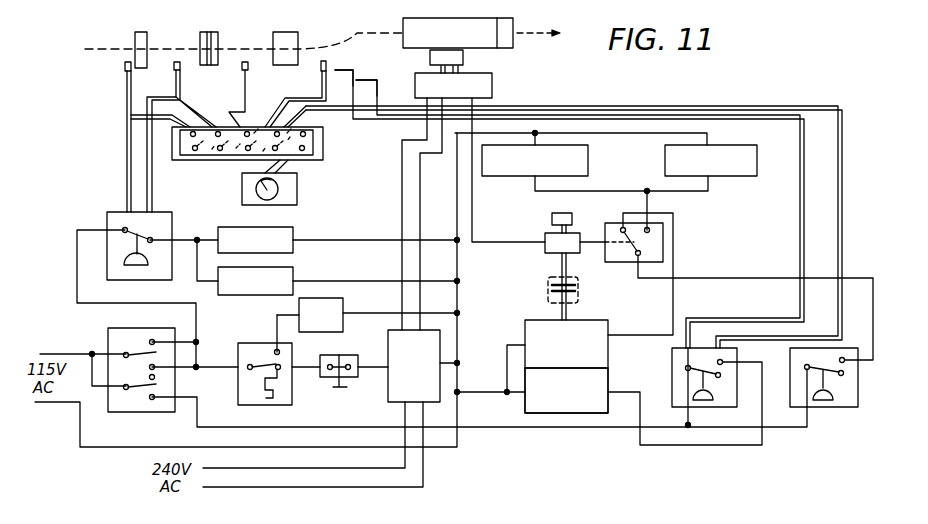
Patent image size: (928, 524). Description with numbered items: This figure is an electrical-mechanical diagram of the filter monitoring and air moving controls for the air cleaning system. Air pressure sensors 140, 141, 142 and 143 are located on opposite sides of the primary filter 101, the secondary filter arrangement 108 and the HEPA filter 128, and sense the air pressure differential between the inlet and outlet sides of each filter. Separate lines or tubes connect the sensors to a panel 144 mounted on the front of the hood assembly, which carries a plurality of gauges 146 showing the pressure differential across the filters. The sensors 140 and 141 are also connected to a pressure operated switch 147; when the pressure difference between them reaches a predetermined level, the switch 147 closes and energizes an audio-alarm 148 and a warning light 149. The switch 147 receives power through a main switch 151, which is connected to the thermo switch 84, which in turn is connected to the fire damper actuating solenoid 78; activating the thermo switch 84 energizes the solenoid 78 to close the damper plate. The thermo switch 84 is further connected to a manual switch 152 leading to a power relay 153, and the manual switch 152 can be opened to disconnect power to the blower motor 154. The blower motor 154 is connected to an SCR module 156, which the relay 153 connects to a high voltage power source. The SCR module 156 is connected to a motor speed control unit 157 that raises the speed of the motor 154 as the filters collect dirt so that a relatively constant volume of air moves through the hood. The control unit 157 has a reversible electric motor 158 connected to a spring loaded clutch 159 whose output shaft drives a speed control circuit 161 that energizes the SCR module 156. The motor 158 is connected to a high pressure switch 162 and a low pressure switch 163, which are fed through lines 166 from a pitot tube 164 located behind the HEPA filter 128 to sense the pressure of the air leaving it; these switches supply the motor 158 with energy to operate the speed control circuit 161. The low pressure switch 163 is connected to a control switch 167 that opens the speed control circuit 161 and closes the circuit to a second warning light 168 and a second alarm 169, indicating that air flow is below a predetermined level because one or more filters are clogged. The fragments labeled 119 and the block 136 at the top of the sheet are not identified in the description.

The reference marker 119 is at (304, 3).
The primary filter 101 is at (142, 32).
The secondary filter arrangement 108 is at (209, 32).
The HEPA filter 128 is at (288, 32).
The discharge unit 136 is at (470, 43).
The air pressure sensor 140 is at (125, 65).
The air pressure sensor 141 is at (180, 70).
The air pressure sensor 142 is at (248, 70).
The air pressure sensor 143 is at (326, 65).
The pitot tube 164 is at (355, 73).
The blower motor 154 is at (463, 58).
The SCR module 156 is at (436, 96).
The panel 144 is at (323, 143).
The gauges 146 is at (297, 189).
The pressure operated switch 147 is at (107, 218).
The audio-alarm 148 is at (273, 250).
The warning light 149 is at (273, 291).
The fire damper actuating solenoid 78 is at (333, 324).
The thermo switch 84 is at (292, 396).
The main switch 151 is at (108, 331).
The manual switch 152 is at (335, 355).
The power relay 153 is at (398, 374).
The motor speed control unit 157 is at (532, 316).
The reversible electric motor 158 is at (550, 401).
The spring loaded clutch 159 is at (580, 293).
The speed control circuit 161 is at (545, 238).
The control switch 167 is at (613, 228).
The second warning light 168 is at (518, 171).
The second alarm 169 is at (694, 171).
The lines 166 is at (841, 214).
The high pressure switch 162 is at (672, 360).
The low pressure switch 163 is at (847, 401).